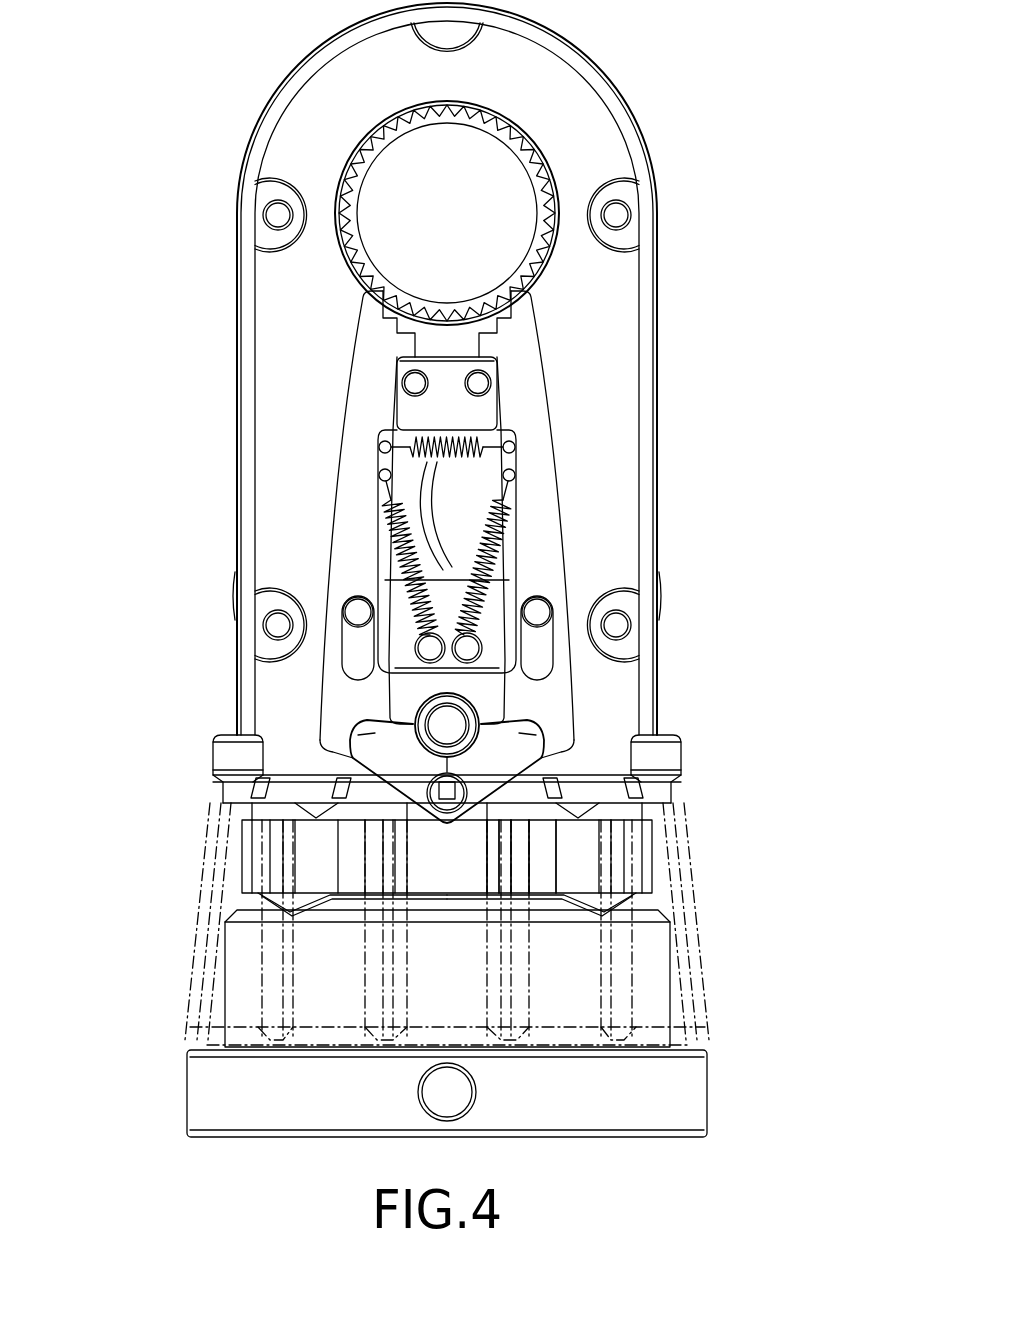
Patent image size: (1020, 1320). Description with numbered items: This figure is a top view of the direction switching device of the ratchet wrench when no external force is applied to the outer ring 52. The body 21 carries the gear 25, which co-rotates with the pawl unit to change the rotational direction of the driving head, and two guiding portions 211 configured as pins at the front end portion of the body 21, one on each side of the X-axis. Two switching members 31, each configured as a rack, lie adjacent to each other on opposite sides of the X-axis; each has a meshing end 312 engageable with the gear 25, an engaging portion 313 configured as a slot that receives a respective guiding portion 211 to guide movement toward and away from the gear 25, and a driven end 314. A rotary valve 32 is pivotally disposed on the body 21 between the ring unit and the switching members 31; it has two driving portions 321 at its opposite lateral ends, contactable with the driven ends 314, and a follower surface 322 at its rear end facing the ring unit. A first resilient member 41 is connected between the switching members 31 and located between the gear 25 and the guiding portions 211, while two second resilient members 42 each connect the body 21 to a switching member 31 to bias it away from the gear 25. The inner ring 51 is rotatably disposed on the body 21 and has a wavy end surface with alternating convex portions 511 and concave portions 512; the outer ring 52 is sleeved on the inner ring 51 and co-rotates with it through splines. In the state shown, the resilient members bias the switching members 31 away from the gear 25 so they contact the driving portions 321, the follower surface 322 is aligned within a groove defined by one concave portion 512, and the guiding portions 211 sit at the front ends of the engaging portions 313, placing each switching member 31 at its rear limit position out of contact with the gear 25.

The body 21 is at (237, 348).
The gear 25 is at (367, 137).
The guiding portions 211 is at (350, 602).
The switching members 31 is at (338, 472).
The meshing end 312 is at (367, 290).
The engaging portion 313 is at (340, 648).
The driven end 314 is at (415, 730).
The rotary valve 32 is at (350, 765).
The driving portions 321 is at (355, 737).
The follower surface 322 is at (445, 815).
The first resilient member 41 is at (405, 440).
The second resilient members 42 is at (395, 548).
The inner ring 51 is at (242, 875).
The convex portions 511 is at (252, 795).
The concave portions 512 is at (560, 856).
The outer ring 52 is at (190, 955).